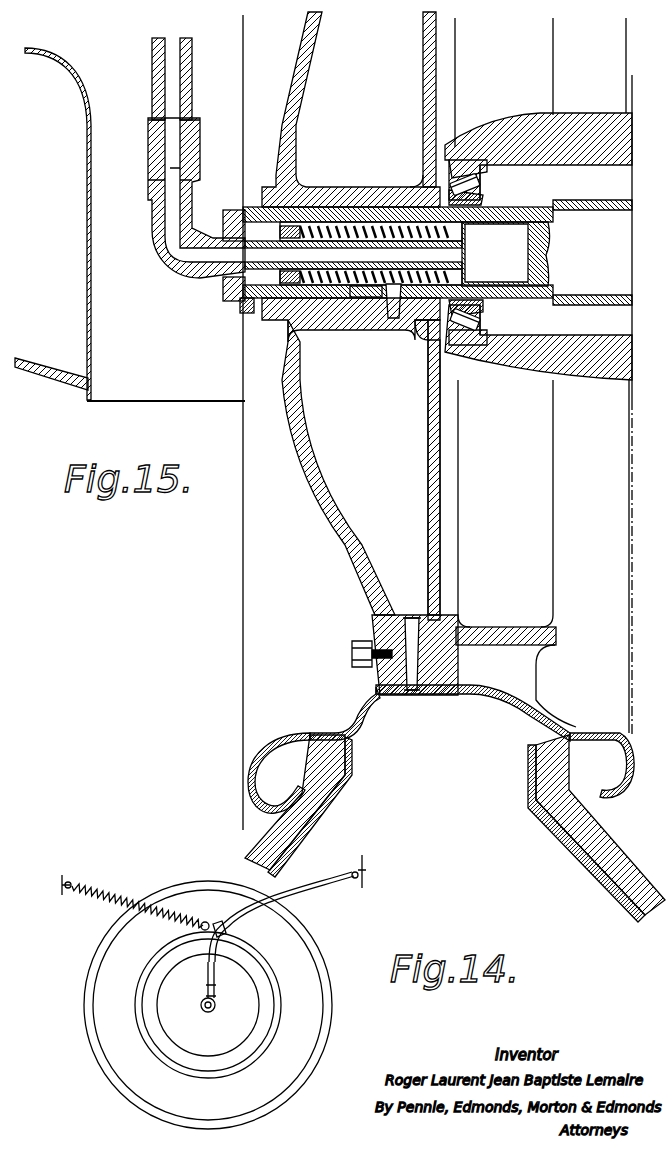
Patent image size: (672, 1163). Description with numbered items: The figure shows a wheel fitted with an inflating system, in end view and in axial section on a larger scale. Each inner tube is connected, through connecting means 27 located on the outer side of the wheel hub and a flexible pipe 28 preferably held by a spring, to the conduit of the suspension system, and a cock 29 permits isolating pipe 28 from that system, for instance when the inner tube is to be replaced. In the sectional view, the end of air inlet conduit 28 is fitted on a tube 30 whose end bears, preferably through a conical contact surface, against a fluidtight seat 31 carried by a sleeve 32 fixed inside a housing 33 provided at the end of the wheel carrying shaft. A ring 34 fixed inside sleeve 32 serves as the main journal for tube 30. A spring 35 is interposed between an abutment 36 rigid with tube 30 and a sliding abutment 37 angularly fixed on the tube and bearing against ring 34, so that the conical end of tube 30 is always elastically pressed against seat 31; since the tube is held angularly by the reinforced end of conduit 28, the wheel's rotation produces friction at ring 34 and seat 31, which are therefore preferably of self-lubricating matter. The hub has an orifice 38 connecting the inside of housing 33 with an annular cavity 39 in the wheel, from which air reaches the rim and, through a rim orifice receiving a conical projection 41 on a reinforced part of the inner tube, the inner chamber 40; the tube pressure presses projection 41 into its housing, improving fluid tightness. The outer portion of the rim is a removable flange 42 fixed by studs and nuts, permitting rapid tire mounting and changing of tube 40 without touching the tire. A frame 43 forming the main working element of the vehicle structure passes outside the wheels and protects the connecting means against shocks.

In FIG. 14, the connecting means 27 is at (215, 1005).
In FIG. 15, the flexible pipe 28 is at (148, 148).
In FIG. 14, the flexible pipe 28 is at (322, 902).
In FIG. 14, the cock 29 is at (368, 857).
In FIG. 15, the tube 30 is at (197, 284).
In FIG. 15, the fluidtight seat 31 is at (466, 312).
In FIG. 15, the sleeve 32 is at (340, 207).
In FIG. 15, the housing 33 is at (498, 235).
In FIG. 15, the ring 34 is at (226, 288).
In FIG. 15, the spring 35 is at (345, 292).
In FIG. 15, the abutment 36 is at (395, 298).
In FIG. 15, the sliding abutment 37 is at (250, 316).
In FIG. 15, the orifice 38 is at (385, 297).
In FIG. 15, the annular cavity 39 is at (358, 462).
In FIG. 15, the inner chamber 40 is at (530, 765).
In FIG. 15, the conical projection 41 is at (466, 627).
In FIG. 15, the removable flange 42 is at (322, 735).
In FIG. 15, the frame 43 is at (90, 255).